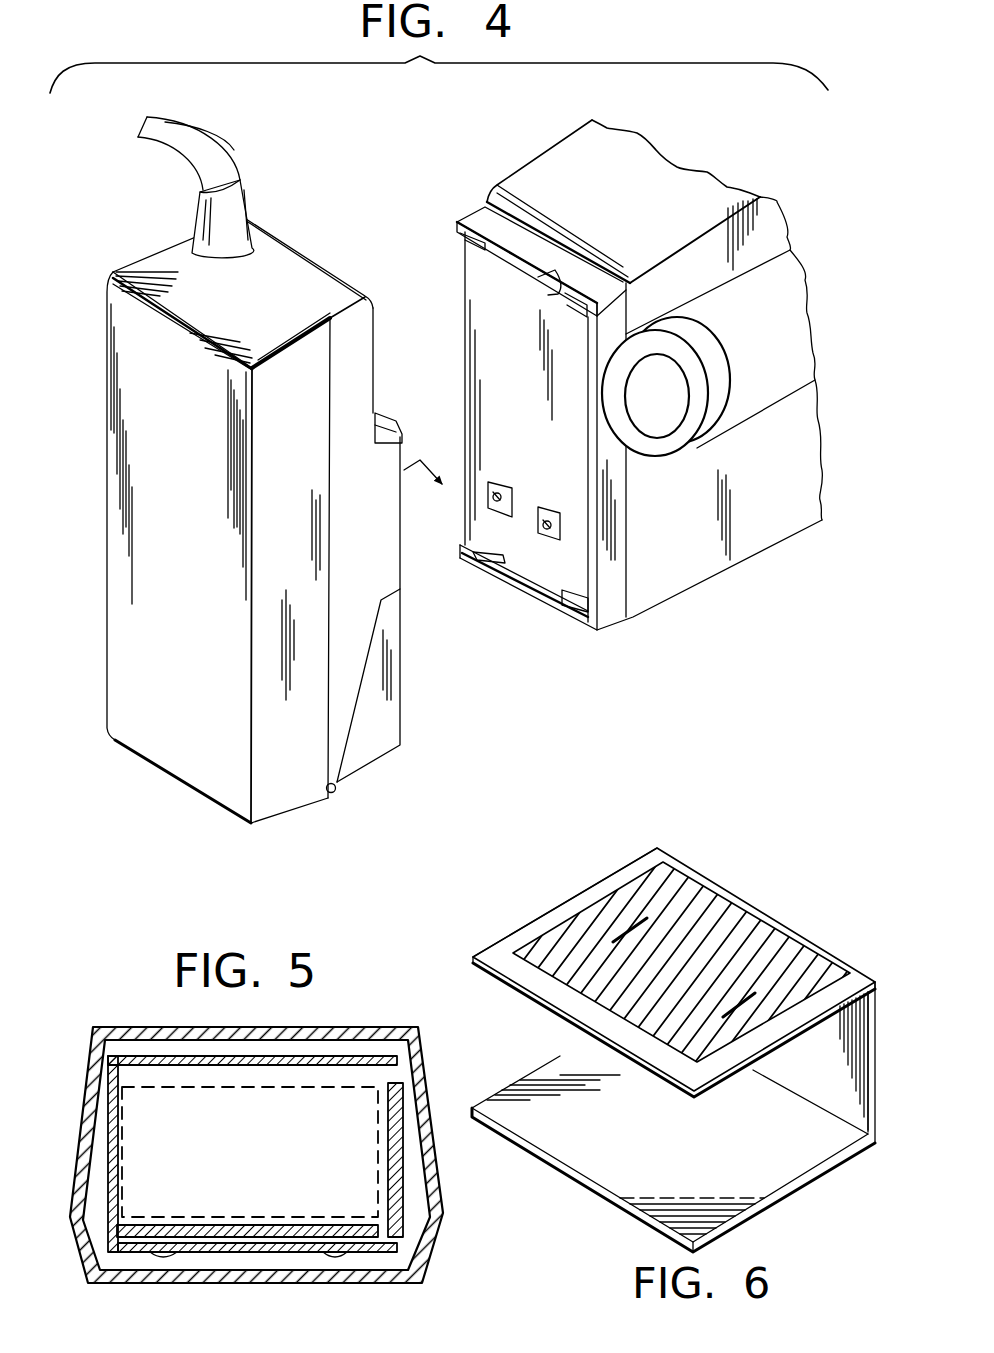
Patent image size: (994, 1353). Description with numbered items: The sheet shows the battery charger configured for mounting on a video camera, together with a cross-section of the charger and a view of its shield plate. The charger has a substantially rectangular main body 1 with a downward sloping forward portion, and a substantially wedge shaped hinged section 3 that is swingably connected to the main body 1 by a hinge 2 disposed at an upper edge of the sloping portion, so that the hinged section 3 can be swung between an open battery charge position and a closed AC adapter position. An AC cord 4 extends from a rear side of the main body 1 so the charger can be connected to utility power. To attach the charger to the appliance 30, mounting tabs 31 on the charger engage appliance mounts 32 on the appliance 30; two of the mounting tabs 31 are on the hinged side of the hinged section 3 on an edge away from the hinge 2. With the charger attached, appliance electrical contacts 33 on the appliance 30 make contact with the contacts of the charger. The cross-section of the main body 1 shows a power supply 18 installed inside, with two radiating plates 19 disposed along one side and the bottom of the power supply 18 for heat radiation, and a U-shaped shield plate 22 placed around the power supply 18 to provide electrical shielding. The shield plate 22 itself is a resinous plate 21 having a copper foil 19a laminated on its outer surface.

In FIG. 4, the main body 1 is at (147, 612).
In FIG. 5, the main body 1 is at (112, 1028).
In FIG. 4, the hinge 2 is at (337, 793).
In FIG. 4, the hinged section 3 is at (395, 706).
In FIG. 4, the AC cord 4 is at (250, 213).
In FIG. 5, the power supply 18 is at (322, 1115).
In FIG. 5, the radiating plates 19 is at (397, 1188).
In FIG. 6, the copper foil 19a is at (800, 935).
In FIG. 6, the resinous plate 21 is at (502, 957).
In FIG. 5, the shield plate 22 is at (108, 1220).
In FIG. 6, the shield plate 22 is at (622, 852).
In FIG. 4, the appliance 30 is at (785, 520).
In FIG. 4, the mounting tabs 31 is at (380, 412).
In FIG. 4, the appliance mounts 32 is at (450, 233).
In FIG. 4, the appliance electrical contacts 33 is at (503, 493).